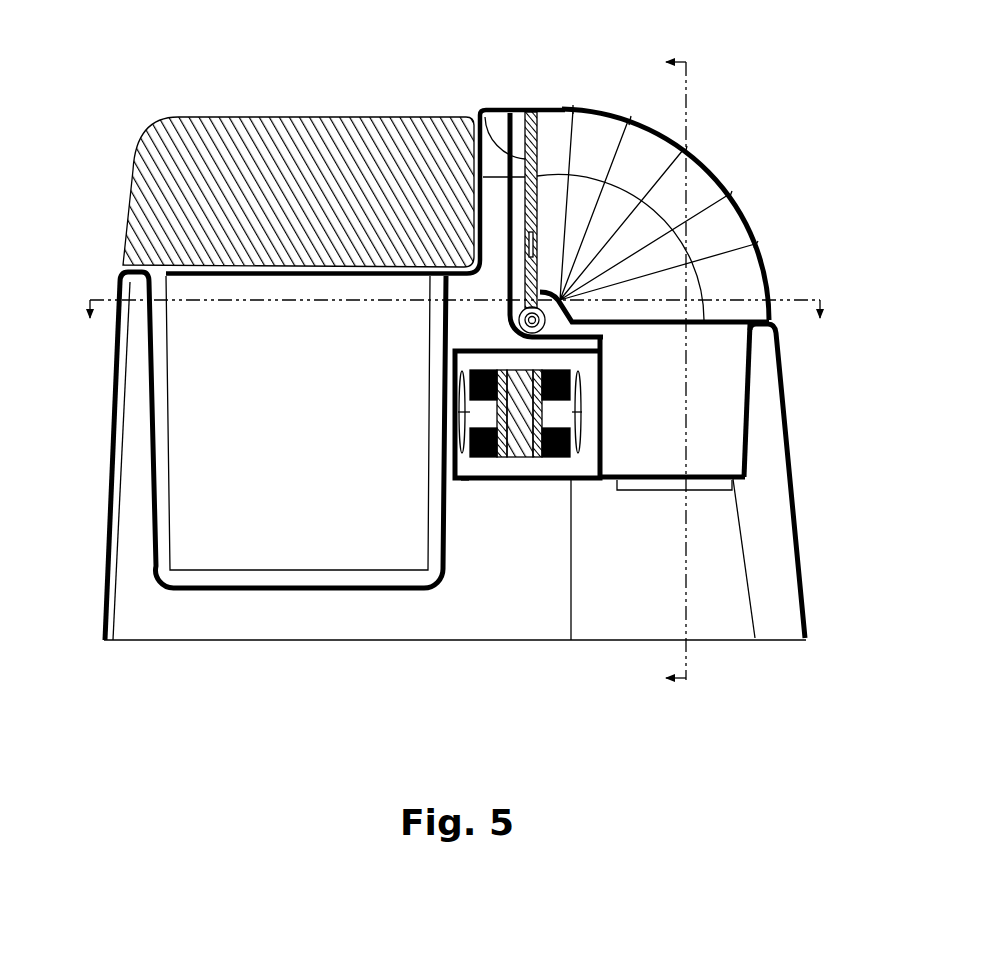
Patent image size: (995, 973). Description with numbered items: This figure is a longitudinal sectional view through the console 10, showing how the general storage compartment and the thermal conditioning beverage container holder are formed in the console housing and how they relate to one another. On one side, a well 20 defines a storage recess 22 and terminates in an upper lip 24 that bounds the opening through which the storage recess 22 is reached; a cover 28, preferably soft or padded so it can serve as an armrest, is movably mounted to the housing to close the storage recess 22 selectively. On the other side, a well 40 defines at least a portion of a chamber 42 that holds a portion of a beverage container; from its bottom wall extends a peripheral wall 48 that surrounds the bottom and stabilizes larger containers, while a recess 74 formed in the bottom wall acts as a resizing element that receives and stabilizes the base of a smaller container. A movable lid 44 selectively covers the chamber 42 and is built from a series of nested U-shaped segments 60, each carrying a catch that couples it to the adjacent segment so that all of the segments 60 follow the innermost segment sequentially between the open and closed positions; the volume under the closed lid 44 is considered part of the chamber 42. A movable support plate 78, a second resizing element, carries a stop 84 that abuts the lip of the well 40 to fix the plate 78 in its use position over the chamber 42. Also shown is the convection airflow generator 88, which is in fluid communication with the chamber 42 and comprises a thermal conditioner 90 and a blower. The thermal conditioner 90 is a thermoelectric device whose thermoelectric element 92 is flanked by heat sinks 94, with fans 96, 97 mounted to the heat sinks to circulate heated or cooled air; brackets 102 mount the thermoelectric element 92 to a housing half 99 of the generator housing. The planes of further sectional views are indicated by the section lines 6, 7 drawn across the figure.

The console 10 is at (388, 32).
The well 20 is at (189, 594).
The storage recess 22 is at (262, 460).
The upper lip 24 is at (124, 263).
The cover 28 is at (292, 116).
The well 40 is at (750, 475).
The chamber 42 is at (607, 480).
The movable lid 44 is at (716, 174).
The peripheral wall 48 is at (752, 407).
The U-shaped segments 60 is at (552, 107).
The recess 74 is at (648, 492).
The movable support plate 78 is at (480, 108).
The stop 84 is at (531, 110).
The convection airflow generator 88 is at (477, 486).
The thermal conditioner 90 is at (523, 481).
The thermoelectric element 92 is at (517, 462).
The heat sink 94 is at (470, 455).
The fan 96 is at (590, 379).
The fan 97 is at (457, 383).
The second housing half 99 is at (465, 483).
The brackets 102 is at (535, 368).
The section line 6- 6 is at (453, 327).
The section line 7- 7 is at (665, 376).